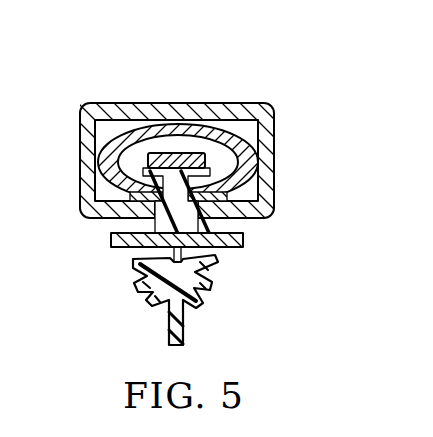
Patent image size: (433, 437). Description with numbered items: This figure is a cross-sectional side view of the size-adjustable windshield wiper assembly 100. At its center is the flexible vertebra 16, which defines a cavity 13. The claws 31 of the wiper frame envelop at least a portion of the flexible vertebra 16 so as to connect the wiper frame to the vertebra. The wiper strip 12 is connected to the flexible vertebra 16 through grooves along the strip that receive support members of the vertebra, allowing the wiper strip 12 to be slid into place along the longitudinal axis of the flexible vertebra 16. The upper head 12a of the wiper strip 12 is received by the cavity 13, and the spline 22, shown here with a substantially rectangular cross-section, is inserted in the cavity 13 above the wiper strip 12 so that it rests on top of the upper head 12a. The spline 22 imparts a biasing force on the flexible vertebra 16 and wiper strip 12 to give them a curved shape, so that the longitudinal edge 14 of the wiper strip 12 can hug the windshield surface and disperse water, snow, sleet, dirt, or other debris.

The size-adjustable windshield wiper assembly 100 is at (256, 56).
The flexible vertebra 16 is at (92, 130).
The claws 31 is at (147, 104).
The cavity 13 is at (116, 147).
The spline 22 is at (163, 150).
The upper head 12a is at (215, 166).
The wiper strip 12 is at (244, 240).
The longitudinal edge 14 is at (175, 317).